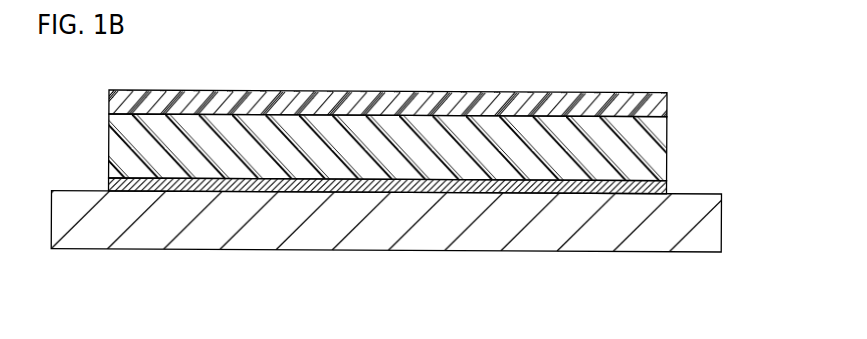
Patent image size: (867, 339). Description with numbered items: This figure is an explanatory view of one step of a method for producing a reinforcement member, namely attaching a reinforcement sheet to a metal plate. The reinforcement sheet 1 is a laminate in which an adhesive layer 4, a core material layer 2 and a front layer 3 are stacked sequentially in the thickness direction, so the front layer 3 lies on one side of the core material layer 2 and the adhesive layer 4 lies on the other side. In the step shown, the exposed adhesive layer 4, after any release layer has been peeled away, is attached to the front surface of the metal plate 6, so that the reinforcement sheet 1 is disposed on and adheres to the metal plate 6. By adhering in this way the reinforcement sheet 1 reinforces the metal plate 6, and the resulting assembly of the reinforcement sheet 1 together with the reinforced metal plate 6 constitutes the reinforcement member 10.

The reinforcement member 10 is at (430, 312).
The reinforcement sheet 1 is at (767, 58).
The core material layer 2 is at (668, 155).
The front layer 3 is at (668, 103).
The adhesive layer 4 is at (668, 188).
The metal plate 6 is at (647, 250).